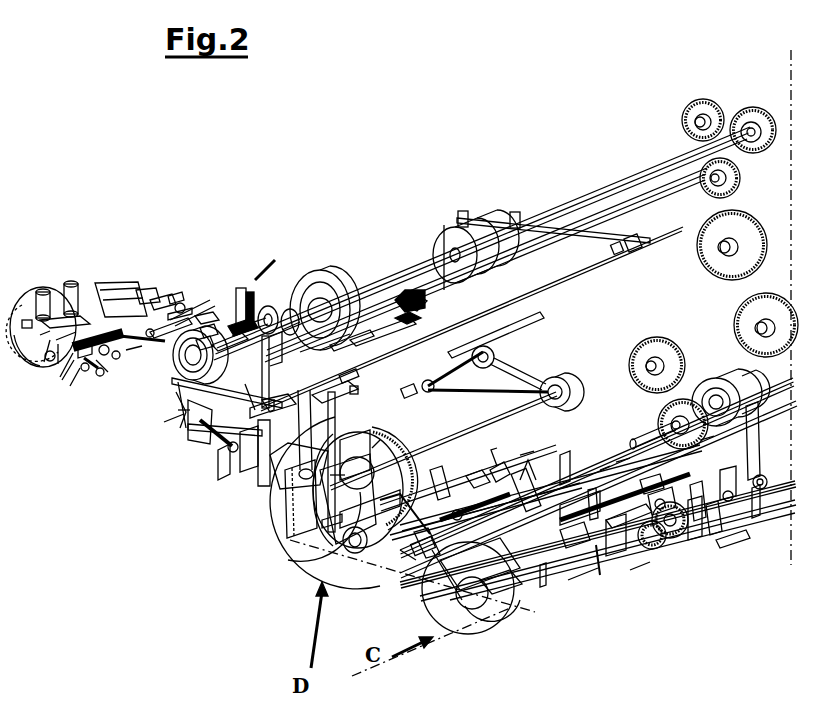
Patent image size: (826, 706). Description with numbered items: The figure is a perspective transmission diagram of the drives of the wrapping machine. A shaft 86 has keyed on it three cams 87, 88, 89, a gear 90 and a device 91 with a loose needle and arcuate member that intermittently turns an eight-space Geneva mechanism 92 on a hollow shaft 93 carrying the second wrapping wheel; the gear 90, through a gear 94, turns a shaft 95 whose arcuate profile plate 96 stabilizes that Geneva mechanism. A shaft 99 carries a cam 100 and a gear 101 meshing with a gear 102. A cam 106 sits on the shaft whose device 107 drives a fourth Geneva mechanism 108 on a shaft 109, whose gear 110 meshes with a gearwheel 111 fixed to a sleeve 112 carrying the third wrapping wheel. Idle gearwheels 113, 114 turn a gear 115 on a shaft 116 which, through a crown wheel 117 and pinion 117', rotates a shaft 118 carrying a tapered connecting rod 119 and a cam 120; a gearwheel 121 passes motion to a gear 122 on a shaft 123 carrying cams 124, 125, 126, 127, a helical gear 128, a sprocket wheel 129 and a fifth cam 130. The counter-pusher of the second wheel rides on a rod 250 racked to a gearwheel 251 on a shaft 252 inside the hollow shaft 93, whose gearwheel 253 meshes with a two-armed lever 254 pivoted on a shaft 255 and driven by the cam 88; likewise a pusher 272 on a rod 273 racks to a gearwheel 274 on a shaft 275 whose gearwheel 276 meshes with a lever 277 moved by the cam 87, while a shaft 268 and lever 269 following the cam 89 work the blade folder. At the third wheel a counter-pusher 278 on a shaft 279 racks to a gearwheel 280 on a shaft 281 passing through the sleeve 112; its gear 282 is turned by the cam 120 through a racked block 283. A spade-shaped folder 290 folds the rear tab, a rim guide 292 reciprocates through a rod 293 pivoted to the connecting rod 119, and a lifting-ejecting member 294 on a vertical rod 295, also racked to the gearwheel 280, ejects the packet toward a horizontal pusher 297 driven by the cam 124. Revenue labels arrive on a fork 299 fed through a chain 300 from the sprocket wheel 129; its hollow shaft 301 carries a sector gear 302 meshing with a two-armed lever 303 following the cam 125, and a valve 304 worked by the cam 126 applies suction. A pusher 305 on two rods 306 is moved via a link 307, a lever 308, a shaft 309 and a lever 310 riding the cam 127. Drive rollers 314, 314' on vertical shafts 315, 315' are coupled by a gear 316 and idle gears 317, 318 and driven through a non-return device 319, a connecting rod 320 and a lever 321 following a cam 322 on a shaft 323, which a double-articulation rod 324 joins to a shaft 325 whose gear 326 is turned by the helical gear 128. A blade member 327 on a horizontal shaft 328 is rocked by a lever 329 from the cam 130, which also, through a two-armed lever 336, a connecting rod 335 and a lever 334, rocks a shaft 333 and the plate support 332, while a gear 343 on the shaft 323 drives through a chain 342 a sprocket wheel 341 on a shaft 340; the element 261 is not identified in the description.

The shaft 86 is at (770, 486).
The cam 87 is at (714, 534).
The cam 88 is at (696, 547).
The cam 89 is at (672, 540).
The gear 90 is at (644, 572).
The device 91 is at (602, 586).
The Geneva mechanism 92 is at (594, 492).
The hollow shaft 93 is at (578, 538).
The gear 94 is at (692, 492).
The shaft 95 is at (660, 494).
The arcuate profile plate 96 is at (620, 564).
The shaft 99 is at (738, 376).
The cam 100 is at (718, 386).
The gear 101 is at (666, 410).
The gear 102 is at (642, 359).
The cam 106 is at (538, 484).
The device 107 is at (418, 556).
The Geneva mechanism 108 is at (496, 470).
The shaft 109 is at (472, 471).
The gear 110 is at (368, 550).
The gearwheel 111 is at (395, 466).
The sleeve 112 is at (380, 438).
The idle gearwheel 113 is at (748, 312).
The idle gearwheel 114 is at (706, 265).
The gear 115 is at (726, 184).
The shaft 116 is at (677, 200).
The crown wheel 117 is at (526, 230).
The pinion 117' is at (434, 298).
The shaft 118 is at (470, 344).
The tapered connecting rod 119 is at (468, 380).
The cam 120 is at (546, 380).
The gearwheel 121 is at (704, 98).
The gear 122 is at (766, 110).
The shaft 123 is at (646, 174).
The cam 124 is at (442, 218).
The cam 125 is at (344, 304).
The cam 126 is at (327, 282).
The cam 127 is at (244, 320).
The helical gear 128 is at (242, 286).
The sprocket wheel 129 is at (206, 322).
The cam 130 is at (170, 363).
The horizontal rod 250 is at (452, 566).
The gearwheel 251 is at (504, 625).
The horizontal shaft 252 is at (552, 589).
The second gearwheel 253 is at (606, 504).
The two-armed lever 254 is at (718, 544).
The shaft 255 is at (724, 487).
The rail 261 is at (766, 518).
The shaft 268 is at (580, 594).
The lever 269 is at (658, 557).
The pusher 272 is at (404, 594).
The horizontal rod 273 is at (412, 564).
The gearwheel 274 is at (472, 593).
The horizontal shaft 275 is at (496, 597).
The second gearwheel 276 is at (610, 500).
The two-armed lever 277 is at (762, 529).
The counter-pusher 278 is at (392, 582).
The horizontal shaft 279 is at (304, 508).
The gearwheel 280 is at (312, 552).
The horizontal shaft 281 is at (458, 426).
The gear 282 is at (530, 398).
The block 283 is at (500, 453).
The folder 290 is at (422, 448).
The guide 292 is at (288, 506).
The rod 293 is at (408, 393).
The lifting-ejecting member 294 is at (346, 387).
The vertical rod 295 is at (280, 459).
The horizontal pusher 297 is at (360, 376).
The fork 299 is at (316, 390).
The chain 300 is at (213, 312).
The hollow shaft 301 is at (266, 392).
The sector gear 302 is at (400, 300).
The two-armed lever 303 is at (372, 330).
The valve 304 is at (268, 306).
The pusher 305 is at (254, 434).
The horizontal rods 306 is at (250, 436).
The link 307 is at (184, 410).
The lever 308 is at (188, 416).
The shaft 309 is at (200, 442).
The lever 310 is at (268, 396).
The drive roller 314 is at (44, 258).
The drive roller 314' is at (78, 278).
The vertical shaft 315 is at (41, 308).
The vertical shaft 315' is at (27, 275).
The gear 316 is at (44, 362).
The idle gear 317 is at (50, 362).
The idle gear 318 is at (58, 366).
The non-return device 319 is at (54, 288).
The connecting rod 320 is at (93, 288).
The lever 321 is at (106, 356).
The cam 322 is at (148, 320).
The shaft 323 is at (124, 356).
The rod with a double articulation 324 is at (130, 350).
The second shaft 325 is at (202, 332).
The gear 326 is at (238, 355).
The blade member 327 is at (218, 477).
The horizontal shaft 328 is at (224, 446).
The lever 329 is at (192, 430).
The support 332 is at (140, 280).
The shaft 333 is at (148, 292).
The lever 334 is at (180, 304).
The connecting rod 335 is at (174, 308).
The two-armed lever 336 is at (178, 296).
The shaft 340 is at (70, 352).
The sprocket wheel 341 is at (85, 360).
The chain 342 is at (90, 348).
The gear 343 is at (106, 362).